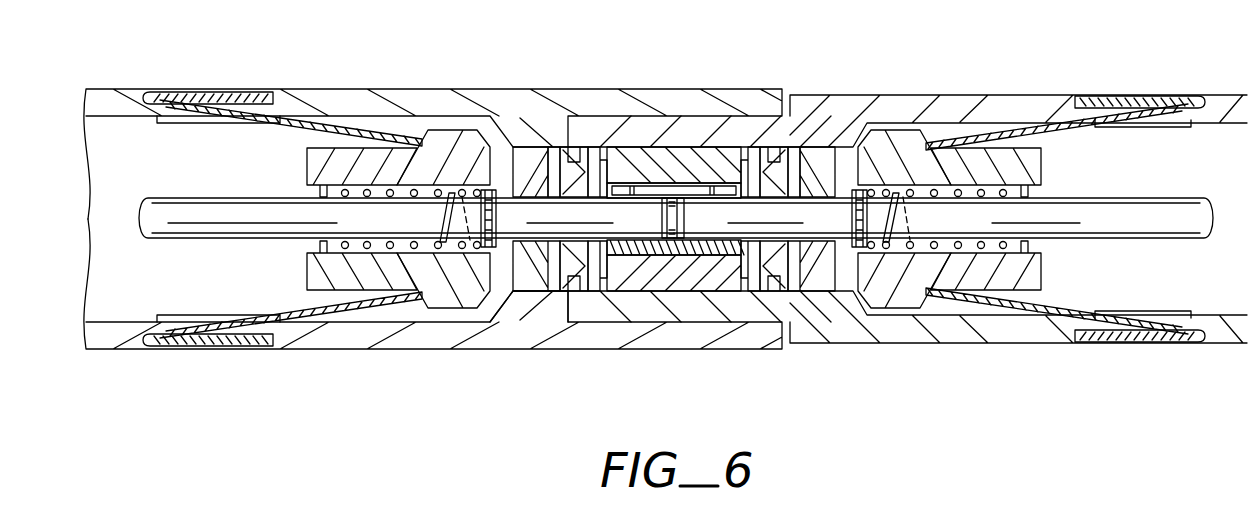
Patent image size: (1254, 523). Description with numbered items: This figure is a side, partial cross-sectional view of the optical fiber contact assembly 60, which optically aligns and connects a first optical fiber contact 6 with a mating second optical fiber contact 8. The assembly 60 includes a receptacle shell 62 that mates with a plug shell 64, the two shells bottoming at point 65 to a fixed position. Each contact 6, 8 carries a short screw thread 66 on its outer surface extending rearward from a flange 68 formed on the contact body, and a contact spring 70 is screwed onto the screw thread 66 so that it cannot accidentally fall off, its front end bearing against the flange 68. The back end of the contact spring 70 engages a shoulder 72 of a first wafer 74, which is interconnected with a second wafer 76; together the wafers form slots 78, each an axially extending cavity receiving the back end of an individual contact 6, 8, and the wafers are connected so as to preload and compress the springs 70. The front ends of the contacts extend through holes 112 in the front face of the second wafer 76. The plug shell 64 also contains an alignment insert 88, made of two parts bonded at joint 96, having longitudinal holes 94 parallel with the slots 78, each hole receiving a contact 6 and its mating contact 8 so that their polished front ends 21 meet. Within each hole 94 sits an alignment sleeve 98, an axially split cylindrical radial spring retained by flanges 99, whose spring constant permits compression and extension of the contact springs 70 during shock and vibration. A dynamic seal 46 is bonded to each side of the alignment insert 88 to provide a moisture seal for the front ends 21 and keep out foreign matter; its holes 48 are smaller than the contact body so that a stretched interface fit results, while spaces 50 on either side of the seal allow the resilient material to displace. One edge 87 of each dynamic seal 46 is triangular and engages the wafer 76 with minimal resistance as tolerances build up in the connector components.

The first optical fiber contact 6 is at (276, 188).
The second optical fiber contact 8 is at (1082, 188).
The front end of the pigtail optical fiber 21 is at (688, 242).
The dynamic seal 46 is at (792, 165).
The holes 48 is at (772, 170).
The spaces 50 is at (783, 280).
The optical fiber contact assembly 60 is at (488, 86).
The receptacle shell 62 is at (311, 349).
The plug shell 64 is at (1043, 348).
The point 65 is at (565, 300).
The screw thread 66 is at (436, 265).
The flange 68 is at (867, 258).
The contact spring 70 is at (393, 189).
The shoulder 72 is at (328, 250).
The first wafer 74 is at (992, 250).
The second wafer 76 is at (993, 189).
The slots 78 is at (945, 147).
The edge 87 is at (558, 150).
The alignment insert 88 is at (657, 157).
The longitudinal holes 94 is at (740, 292).
The joint 96 is at (655, 257).
The alignment sleeve 98 is at (594, 292).
The flanges 99 is at (752, 192).
The holes 112 is at (524, 195).